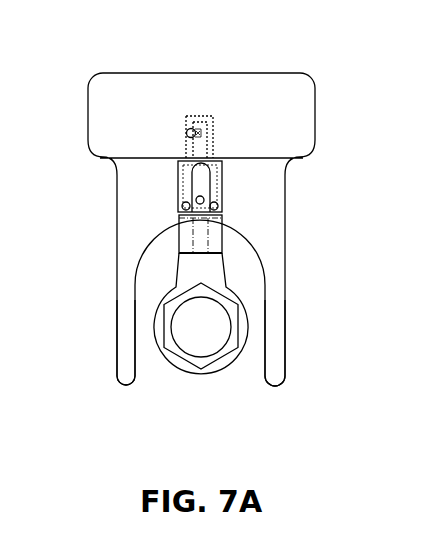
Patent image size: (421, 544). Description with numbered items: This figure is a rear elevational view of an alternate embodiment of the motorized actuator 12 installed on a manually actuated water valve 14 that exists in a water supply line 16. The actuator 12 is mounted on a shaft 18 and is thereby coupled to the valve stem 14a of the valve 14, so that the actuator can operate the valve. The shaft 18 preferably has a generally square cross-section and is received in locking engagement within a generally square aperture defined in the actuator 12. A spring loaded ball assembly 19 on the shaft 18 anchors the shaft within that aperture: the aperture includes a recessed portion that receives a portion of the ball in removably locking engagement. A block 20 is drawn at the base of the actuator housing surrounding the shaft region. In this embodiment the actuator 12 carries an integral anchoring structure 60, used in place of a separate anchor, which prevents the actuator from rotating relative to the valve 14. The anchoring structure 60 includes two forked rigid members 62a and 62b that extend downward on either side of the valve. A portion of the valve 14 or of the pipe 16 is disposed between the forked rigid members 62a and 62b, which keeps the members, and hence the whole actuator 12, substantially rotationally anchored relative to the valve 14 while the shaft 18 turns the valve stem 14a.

The motorized actuator 12 is at (138, 72).
The manually actuated water valve 14 is at (195, 273).
The valve stem 14a is at (213, 190).
The water supply line 16 is at (217, 350).
The shaft 18 is at (214, 141).
The spring loaded ball assembly 19 is at (188, 132).
The retaining block 20 is at (178, 180).
The anchoring structure 60 is at (285, 198).
The forked rigid member 62a is at (129, 379).
The forked rigid member 62b is at (280, 373).